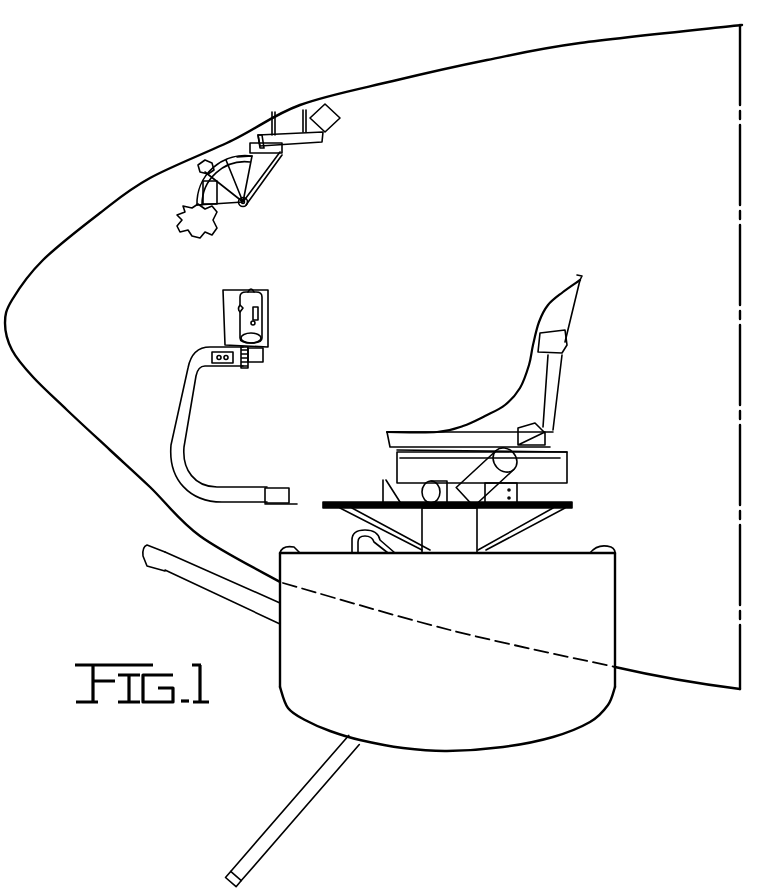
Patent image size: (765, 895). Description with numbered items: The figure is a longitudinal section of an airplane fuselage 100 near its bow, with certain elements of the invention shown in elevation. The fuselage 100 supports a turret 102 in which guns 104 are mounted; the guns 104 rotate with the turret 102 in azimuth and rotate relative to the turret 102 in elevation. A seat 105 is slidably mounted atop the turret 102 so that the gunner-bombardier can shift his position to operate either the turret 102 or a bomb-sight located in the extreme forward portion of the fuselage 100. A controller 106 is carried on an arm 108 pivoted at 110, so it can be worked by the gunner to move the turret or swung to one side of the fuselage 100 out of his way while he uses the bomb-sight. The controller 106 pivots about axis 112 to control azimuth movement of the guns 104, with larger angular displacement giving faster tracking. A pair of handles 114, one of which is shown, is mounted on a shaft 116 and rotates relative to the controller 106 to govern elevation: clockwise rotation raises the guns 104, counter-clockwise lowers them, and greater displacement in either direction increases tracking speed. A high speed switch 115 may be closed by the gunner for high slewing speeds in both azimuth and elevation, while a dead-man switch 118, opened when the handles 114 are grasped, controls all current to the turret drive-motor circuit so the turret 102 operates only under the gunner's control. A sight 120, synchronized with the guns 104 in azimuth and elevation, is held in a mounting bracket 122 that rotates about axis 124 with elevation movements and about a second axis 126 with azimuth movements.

The fuselage 100 is at (487, 60).
The turret 102 is at (447, 761).
The guns 104 is at (272, 836).
The seat 105 is at (560, 393).
The controller 106 is at (254, 306).
The arm 108 is at (190, 410).
The pivot 110 is at (280, 488).
The axis 112 is at (263, 349).
The handles 114 is at (260, 330).
The high speed switch 115 is at (252, 289).
The shaft 116 is at (222, 305).
The switch 118 is at (250, 322).
The sight 120 is at (258, 180).
The mounting bracket 122 is at (237, 210).
The axis 124 is at (250, 200).
The second axis 126 is at (261, 136).